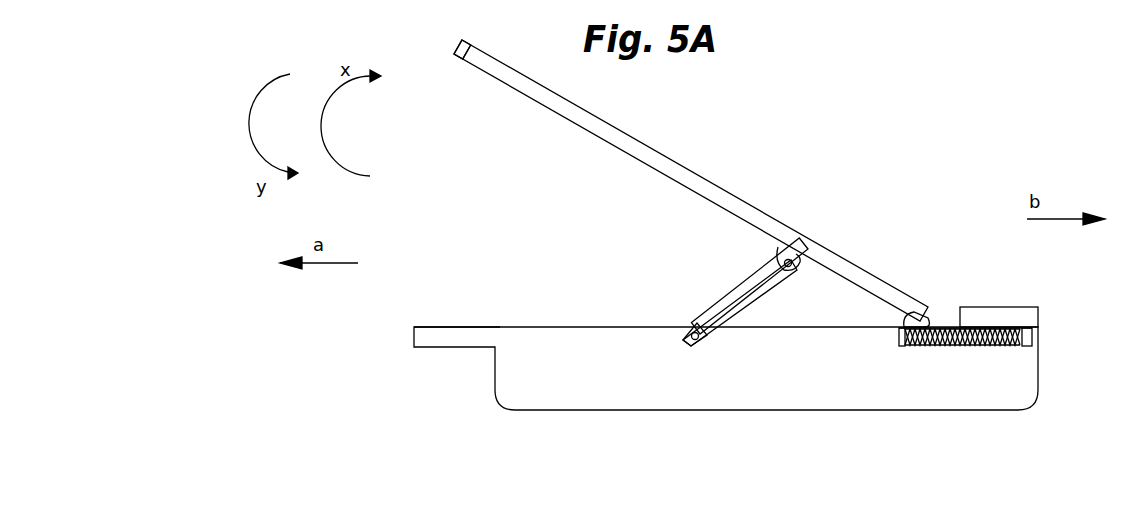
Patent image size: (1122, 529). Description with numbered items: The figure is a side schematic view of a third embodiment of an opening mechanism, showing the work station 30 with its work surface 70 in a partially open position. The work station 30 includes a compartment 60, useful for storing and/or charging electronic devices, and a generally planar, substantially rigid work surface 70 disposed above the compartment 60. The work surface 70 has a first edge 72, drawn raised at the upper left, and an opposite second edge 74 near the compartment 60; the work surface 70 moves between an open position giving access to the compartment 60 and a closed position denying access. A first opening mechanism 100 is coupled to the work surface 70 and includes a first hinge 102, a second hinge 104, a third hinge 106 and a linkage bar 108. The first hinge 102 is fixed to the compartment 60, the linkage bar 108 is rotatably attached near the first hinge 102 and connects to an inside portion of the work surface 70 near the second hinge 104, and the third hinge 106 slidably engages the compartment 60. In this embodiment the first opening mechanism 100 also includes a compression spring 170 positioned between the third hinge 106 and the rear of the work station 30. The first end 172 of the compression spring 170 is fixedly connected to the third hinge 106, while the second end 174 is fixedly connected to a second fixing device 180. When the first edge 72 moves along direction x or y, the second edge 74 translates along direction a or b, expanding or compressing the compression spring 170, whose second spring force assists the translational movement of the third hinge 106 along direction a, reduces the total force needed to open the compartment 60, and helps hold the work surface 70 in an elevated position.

The work station 30 is at (775, 157).
The compartment 60 is at (1040, 390).
The work surface 70 is at (576, 105).
The first edge 72 is at (454, 48).
The second edge 74 is at (937, 318).
The first opening mechanism 100 is at (600, 308).
The first hinge 102 is at (697, 328).
The second hinge 104 is at (790, 259).
The third hinge 106 is at (900, 346).
The linkage bar 108 is at (758, 277).
The compression spring 170 is at (968, 346).
The first end 172 is at (922, 346).
The second end 174 is at (1022, 346).
The second fixing device 180 is at (1040, 312).